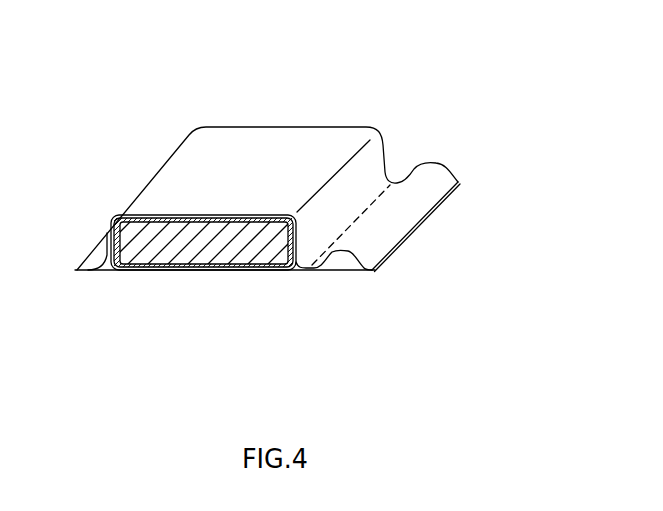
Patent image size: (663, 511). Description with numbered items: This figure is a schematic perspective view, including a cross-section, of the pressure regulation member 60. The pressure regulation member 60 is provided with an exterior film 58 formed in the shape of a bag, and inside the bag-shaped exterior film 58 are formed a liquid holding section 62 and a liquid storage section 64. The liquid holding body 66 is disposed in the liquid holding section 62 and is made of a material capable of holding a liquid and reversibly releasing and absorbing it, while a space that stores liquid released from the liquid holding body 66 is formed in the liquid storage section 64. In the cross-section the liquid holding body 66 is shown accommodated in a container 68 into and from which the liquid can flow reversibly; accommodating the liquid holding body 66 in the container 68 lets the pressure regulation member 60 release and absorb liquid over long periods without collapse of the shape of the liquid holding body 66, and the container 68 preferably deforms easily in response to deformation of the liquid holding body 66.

The exterior film 58 is at (433, 196).
The pressure regulation member 60 is at (486, 72).
The liquid holding section 62 is at (188, 270).
The liquid storage section 64 is at (333, 270).
The liquid holding body 66 is at (158, 232).
The container 68 is at (137, 270).